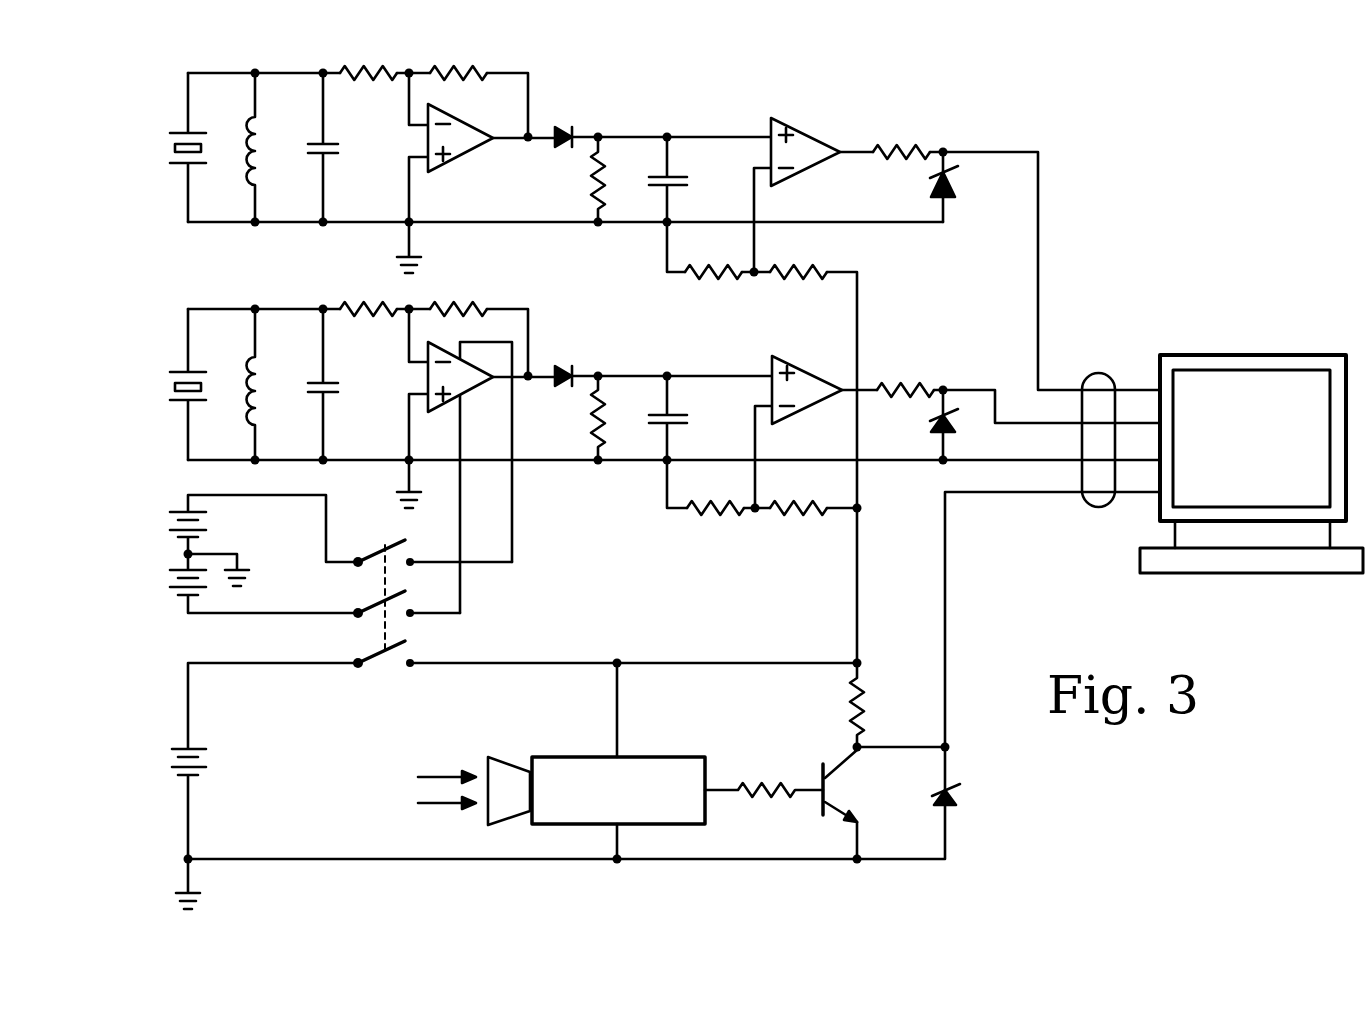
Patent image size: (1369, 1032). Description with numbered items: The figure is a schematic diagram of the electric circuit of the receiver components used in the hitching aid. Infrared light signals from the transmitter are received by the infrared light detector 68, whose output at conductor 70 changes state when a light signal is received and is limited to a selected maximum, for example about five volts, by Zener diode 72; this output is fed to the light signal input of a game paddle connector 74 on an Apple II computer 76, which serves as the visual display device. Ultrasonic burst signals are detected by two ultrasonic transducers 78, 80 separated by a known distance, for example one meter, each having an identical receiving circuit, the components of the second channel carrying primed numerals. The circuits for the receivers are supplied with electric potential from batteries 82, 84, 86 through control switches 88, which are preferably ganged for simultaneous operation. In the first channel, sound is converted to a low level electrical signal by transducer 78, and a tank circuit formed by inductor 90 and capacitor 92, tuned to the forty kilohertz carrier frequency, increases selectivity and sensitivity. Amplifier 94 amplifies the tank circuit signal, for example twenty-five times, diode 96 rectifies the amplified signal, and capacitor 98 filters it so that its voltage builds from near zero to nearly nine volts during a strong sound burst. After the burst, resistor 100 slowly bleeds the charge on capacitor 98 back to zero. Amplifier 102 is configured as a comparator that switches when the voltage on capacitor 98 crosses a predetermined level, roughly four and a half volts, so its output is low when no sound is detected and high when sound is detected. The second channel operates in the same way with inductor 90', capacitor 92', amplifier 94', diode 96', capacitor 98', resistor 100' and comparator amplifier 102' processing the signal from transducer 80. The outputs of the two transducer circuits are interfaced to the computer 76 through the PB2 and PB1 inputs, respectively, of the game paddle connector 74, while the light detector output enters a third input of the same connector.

The infrared light detector 68 is at (580, 755).
The conductor 70 is at (718, 788).
The Zener diode 72 is at (958, 792).
The game paddle connector 74 is at (1085, 373).
The Apple II computer 76 is at (1265, 352).
The ultrasonic transducer 78 is at (172, 134).
The ultrasonic transducer 80 is at (176, 372).
The battery 82 is at (180, 748).
The battery 84 is at (184, 554).
The battery 86 is at (180, 506).
The control switches 88 is at (362, 548).
The tank circuit inductor 90 is at (227, 147).
The tank circuit inductor 90' is at (227, 384).
The tank circuit capacitor 92 is at (304, 147).
The tank circuit capacitor 92' is at (304, 384).
The amplifier 94 is at (464, 152).
The amplifier 94' is at (424, 377).
The diode 96 is at (567, 114).
The diode 96' is at (588, 350).
The capacitor 98 is at (689, 179).
The capacitor 98' is at (695, 418).
The resistor 100 is at (562, 179).
The resistor 100' is at (562, 418).
The amplifier 102 is at (824, 141).
The amplifier 102' is at (808, 370).
The PB1 input PB1 is at (1037, 422).
The PB2 input PB2 is at (1058, 388).